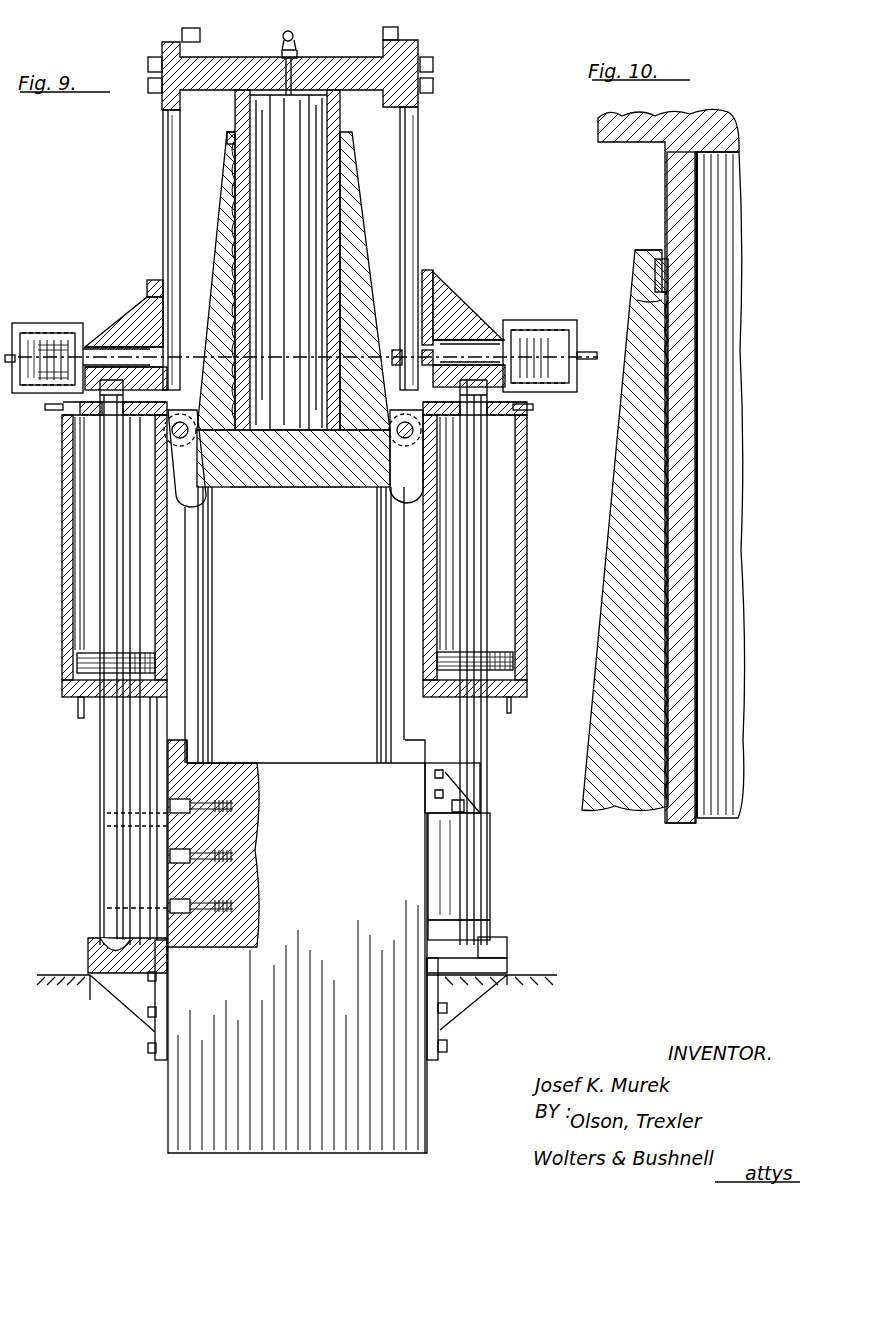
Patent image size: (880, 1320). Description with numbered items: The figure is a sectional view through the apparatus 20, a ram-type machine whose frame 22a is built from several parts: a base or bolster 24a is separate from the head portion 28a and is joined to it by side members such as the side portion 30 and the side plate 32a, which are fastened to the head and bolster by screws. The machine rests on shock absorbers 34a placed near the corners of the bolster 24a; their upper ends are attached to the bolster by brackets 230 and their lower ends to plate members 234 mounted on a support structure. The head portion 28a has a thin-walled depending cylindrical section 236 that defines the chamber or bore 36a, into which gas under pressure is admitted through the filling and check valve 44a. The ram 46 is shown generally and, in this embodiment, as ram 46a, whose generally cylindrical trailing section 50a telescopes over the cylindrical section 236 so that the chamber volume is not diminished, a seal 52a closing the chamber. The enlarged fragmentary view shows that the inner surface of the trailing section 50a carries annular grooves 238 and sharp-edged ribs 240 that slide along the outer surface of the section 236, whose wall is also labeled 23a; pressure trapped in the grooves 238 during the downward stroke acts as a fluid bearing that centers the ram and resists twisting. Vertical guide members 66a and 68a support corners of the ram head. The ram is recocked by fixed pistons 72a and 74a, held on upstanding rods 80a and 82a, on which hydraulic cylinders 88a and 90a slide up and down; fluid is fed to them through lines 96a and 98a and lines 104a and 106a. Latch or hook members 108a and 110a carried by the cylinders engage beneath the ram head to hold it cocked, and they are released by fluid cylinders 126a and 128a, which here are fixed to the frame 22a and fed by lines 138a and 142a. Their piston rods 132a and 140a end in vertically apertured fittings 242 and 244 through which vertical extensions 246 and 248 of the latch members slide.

In FIG. 9, the apparatus 20 is at (447, 233).
In FIG. 9, the frame 22a is at (447, 63).
In FIG. 10, the cylindrical wall 23a is at (686, 500).
In FIG. 9, the base or bolster 24a is at (190, 1122).
In FIG. 9, the head portion 28a is at (340, 68).
In FIG. 10, the head portion 28a is at (690, 122).
In FIG. 9, the side portion 30 is at (168, 765).
In FIG. 9, the side plate 32a is at (420, 752).
In FIG. 9, the shock absorbers 34a is at (470, 872).
In FIG. 9, the chamber or bore 36a is at (332, 150).
In FIG. 10, the chamber or bore 36a is at (699, 413).
In FIG. 9, the filling and check valve 44a is at (292, 46).
In FIG. 9, the ram 46 is at (246, 488).
In FIG. 9, the ram 46a is at (361, 499).
In FIG. 9, the trailing section of the ram 50a is at (360, 268).
In FIG. 10, the trailing section of the ram 50a is at (620, 525).
In FIG. 10, the seal 52a is at (668, 275).
In FIG. 9, the vertical guide member 66a is at (214, 580).
In FIG. 9, the vertical guide member 68a is at (380, 640).
In FIG. 9, the fixed piston 72a is at (80, 670).
In FIG. 9, the fixed piston 74a is at (520, 645).
In FIG. 9, the upstanding rod 80a is at (110, 757).
In FIG. 9, the upstanding rod 82a is at (490, 748).
In FIG. 9, the hydraulic cylinder 88a is at (68, 598).
In FIG. 9, the hydraulic cylinder 90a is at (527, 575).
In FIG. 9, the hydraulic conduit 96a is at (78, 718).
In FIG. 9, the hydraulic conduit 98a is at (50, 412).
In FIG. 9, the fluid line 104a is at (513, 710).
In FIG. 9, the fluid line 106a is at (533, 412).
In FIG. 9, the latch or hook member 108a is at (180, 175).
In FIG. 9, the latch or hook member 110a is at (420, 133).
In FIG. 9, the fluid operated cylinder 126a is at (65, 325).
In FIG. 9, the fluid operated cylinder 128a is at (524, 325).
In FIG. 9, the piston rod 132a is at (130, 296).
In FIG. 9, the conduit 138a is at (20, 350).
In FIG. 9, the piston rod 140a is at (447, 343).
In FIG. 9, the fluid line 142a is at (535, 358).
In FIG. 9, the brackets 230 is at (455, 795).
In FIG. 9, the plate members 234 is at (490, 968).
In FIG. 9, the cylindrical section 236 is at (340, 205).
In FIG. 10, the annular grooves 238 is at (618, 269).
In FIG. 10, the ribs 240 is at (653, 320).
In FIG. 9, the vertically apertured fitting 242 is at (207, 304).
In FIG. 9, the vertically apertured fitting 244 is at (390, 357).
In FIG. 9, the vertical extension 246 is at (173, 210).
In FIG. 9, the vertical extension 248 is at (408, 172).